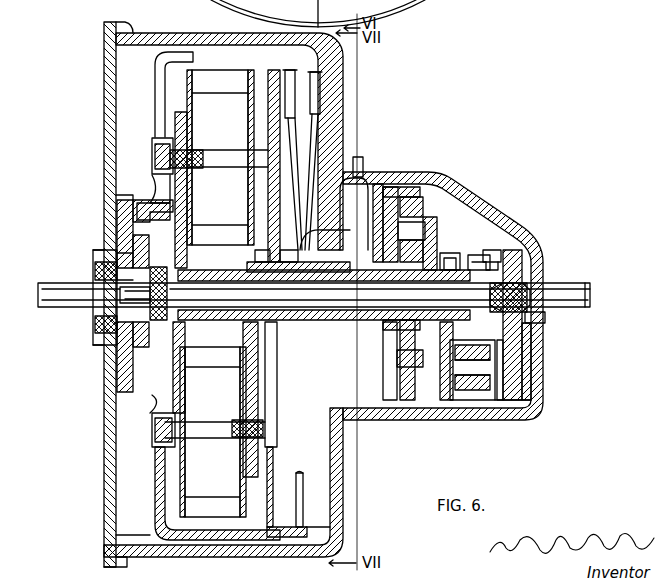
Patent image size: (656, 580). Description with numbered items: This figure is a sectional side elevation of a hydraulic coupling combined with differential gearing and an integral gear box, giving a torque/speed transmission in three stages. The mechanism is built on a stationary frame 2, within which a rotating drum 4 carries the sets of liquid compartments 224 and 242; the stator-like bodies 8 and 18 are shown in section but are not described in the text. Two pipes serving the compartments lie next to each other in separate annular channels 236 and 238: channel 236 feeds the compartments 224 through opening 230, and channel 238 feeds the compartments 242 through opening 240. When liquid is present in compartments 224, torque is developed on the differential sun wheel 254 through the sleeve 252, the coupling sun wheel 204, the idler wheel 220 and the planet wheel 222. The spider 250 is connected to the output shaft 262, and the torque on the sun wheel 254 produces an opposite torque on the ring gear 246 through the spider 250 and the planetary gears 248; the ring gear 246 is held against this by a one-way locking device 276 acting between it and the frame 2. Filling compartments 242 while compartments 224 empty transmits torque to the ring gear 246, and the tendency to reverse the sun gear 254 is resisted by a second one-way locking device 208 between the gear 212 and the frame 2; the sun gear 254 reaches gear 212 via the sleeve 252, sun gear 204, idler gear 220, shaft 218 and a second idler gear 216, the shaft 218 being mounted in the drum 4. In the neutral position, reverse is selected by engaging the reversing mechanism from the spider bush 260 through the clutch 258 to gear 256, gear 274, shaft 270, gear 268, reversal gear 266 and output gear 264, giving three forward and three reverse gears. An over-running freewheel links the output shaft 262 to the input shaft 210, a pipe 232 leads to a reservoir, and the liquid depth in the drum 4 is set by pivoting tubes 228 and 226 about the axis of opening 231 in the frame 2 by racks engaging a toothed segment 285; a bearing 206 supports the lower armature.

The frame 2 is at (106, 560).
The rotating drum 4 is at (155, 522).
The lower motor stator 8 is at (206, 508).
The upper motor stator 18 is at (222, 233).
The coupling sun wheel 204 is at (155, 340).
The lower armature bearing 206 is at (180, 333).
The one-way locking device 208 is at (88, 328).
The input shaft 210 is at (69, 292).
The gear 212 is at (114, 254).
The second idler gear 216 is at (118, 222).
The shaft 218 is at (118, 200).
The idler wheel 220 is at (160, 193).
The planet wheel 222 is at (175, 128).
The compartments 224 is at (200, 65).
The tube 226 is at (292, 72).
The tube 228 is at (320, 76).
The opening 230 is at (272, 85).
The opening 231 is at (298, 251).
The pipe 232 is at (364, 166).
The annular channel 236 is at (283, 513).
The annular channel 238 is at (313, 522).
The opening 240 is at (327, 532).
The compartments 242 is at (217, 527).
The ring gear 246 is at (420, 205).
The planetary gears 248 is at (416, 208).
The spider 250 is at (413, 226).
The sleeve 252 is at (407, 228).
The differential sun wheel 254 is at (345, 262).
The gear 256 is at (440, 258).
The clutch 258 is at (523, 241).
The spider bush 260 is at (527, 263).
The output shaft 262 is at (572, 303).
The output gear 264 is at (530, 320).
The reversal gear 266 is at (522, 348).
The gear 268 is at (524, 397).
The shaft 270 is at (483, 371).
The gear 274 is at (482, 387).
The one-way locking device 276 is at (398, 398).
The toothed segment 285 is at (377, 193).